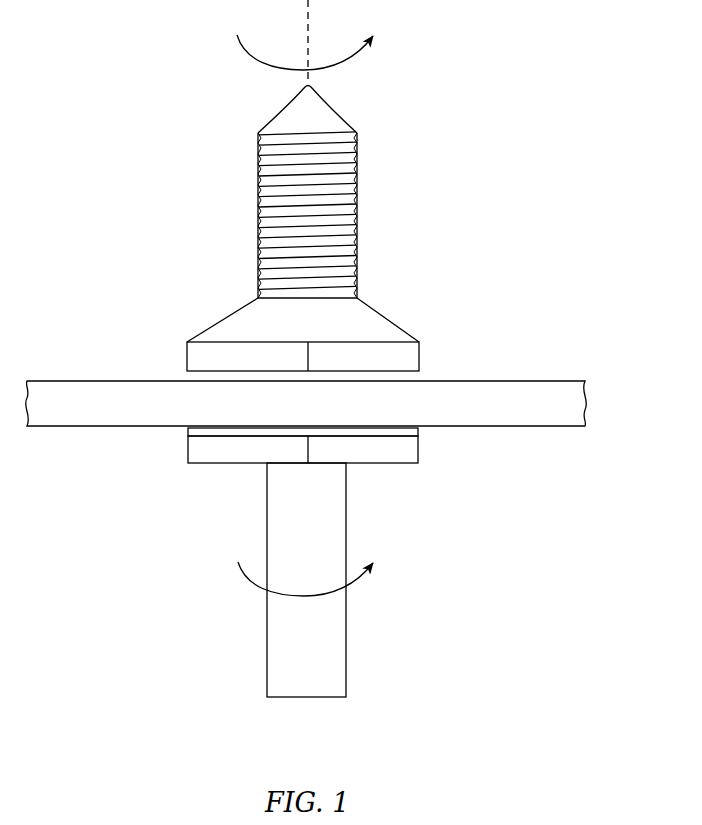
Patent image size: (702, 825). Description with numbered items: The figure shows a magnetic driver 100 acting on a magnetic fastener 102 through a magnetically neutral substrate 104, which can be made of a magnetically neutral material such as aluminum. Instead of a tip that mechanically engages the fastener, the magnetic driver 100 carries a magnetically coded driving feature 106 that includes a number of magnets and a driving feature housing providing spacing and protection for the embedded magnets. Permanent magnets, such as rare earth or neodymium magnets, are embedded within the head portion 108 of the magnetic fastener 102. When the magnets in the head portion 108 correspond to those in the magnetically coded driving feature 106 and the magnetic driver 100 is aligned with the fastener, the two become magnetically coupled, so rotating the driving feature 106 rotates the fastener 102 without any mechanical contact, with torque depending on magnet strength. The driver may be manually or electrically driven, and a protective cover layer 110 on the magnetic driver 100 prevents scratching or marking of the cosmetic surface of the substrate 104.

The magnetic driver 100 is at (378, 696).
The magnetic fastener 102 is at (216, 169).
The magnetically neutral substrate 104 is at (306, 403).
The magnetically coded driving feature 106 is at (432, 472).
The head portion 108 is at (434, 332).
The protective cover layer 110 is at (188, 429).